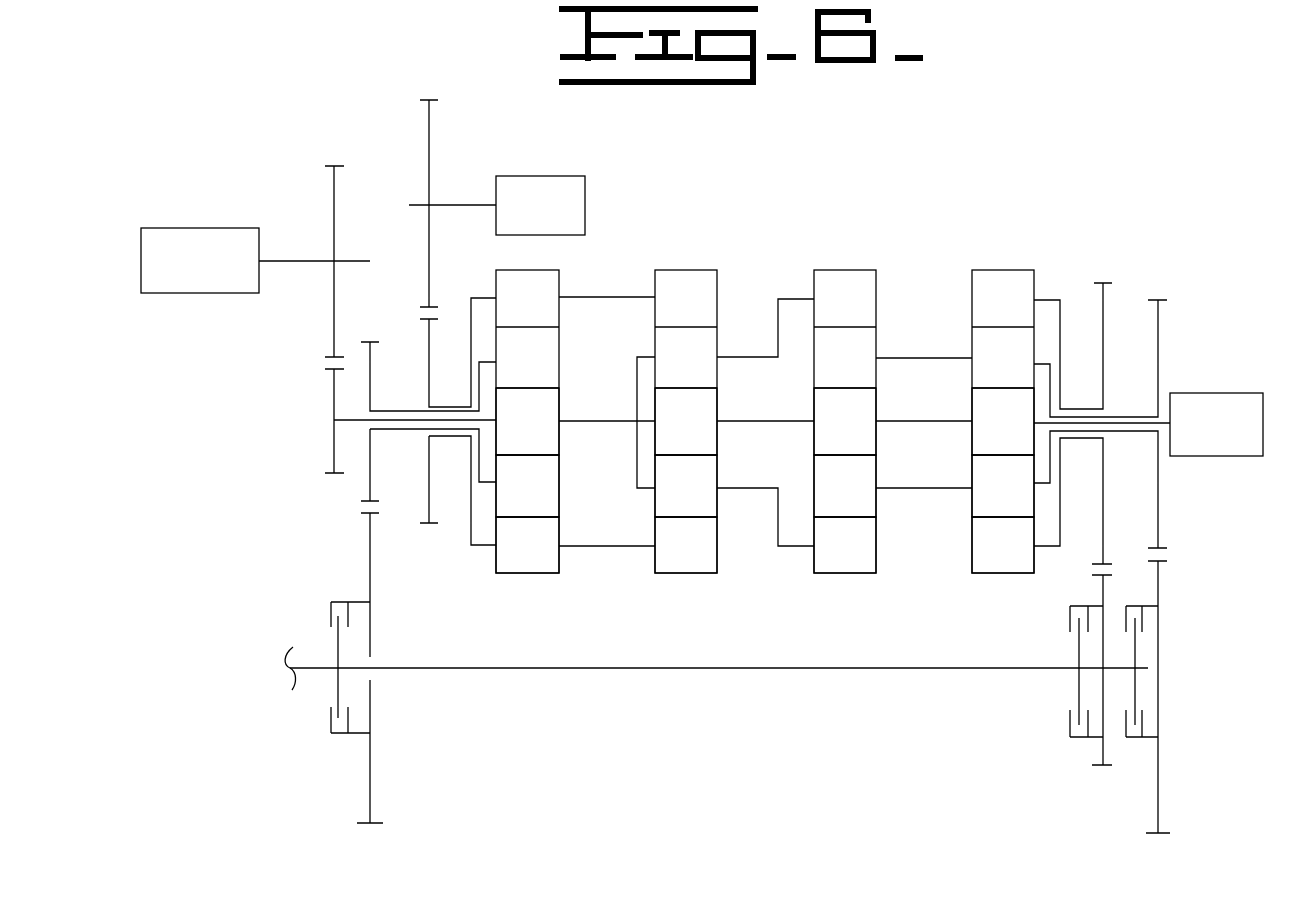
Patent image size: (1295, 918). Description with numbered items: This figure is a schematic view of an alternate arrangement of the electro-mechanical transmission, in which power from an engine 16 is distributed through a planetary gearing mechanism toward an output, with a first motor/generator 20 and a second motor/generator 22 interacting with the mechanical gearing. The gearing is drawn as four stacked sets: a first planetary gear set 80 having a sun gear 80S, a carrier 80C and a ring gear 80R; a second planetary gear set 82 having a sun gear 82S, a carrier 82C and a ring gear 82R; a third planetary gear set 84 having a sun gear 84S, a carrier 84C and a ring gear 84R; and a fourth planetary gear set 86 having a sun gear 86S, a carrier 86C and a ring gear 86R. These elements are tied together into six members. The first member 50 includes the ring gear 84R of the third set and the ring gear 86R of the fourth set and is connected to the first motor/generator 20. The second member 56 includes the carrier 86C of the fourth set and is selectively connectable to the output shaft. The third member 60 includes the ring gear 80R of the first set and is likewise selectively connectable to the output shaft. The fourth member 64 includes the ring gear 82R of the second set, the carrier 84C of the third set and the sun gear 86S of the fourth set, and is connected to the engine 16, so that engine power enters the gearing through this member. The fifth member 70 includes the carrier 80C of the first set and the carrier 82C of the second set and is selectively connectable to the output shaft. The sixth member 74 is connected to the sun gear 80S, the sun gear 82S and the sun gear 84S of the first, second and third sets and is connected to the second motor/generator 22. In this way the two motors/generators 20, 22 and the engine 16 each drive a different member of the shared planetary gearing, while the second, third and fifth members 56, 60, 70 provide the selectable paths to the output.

The engine 16 is at (217, 228).
The first motor/generator 20 is at (558, 176).
The second motor/generator 22 is at (1245, 393).
The first member 50 is at (490, 298).
The second member 56 is at (390, 430).
The third member 60 is at (1040, 298).
The fourth member 64 is at (357, 422).
The fifth member 70 is at (1150, 432).
The sixth member 74 is at (1163, 425).
The first planetary gear set 80 is at (1006, 590).
The sun gear 80S is at (972, 414).
The carrier 80C is at (972, 500).
The ring gear 80R is at (967, 573).
The second planetary gear set 82 is at (843, 590).
The sun gear 82S is at (876, 445).
The carrier 82C is at (876, 512).
The ring gear 82R is at (876, 573).
The third planetary gear set 84 is at (683, 590).
The sun gear 84S is at (717, 413).
The carrier 84C is at (717, 470).
The ring gear 84R is at (717, 564).
The fourth planetary gear set 86 is at (525, 590).
The sun gear 86S is at (559, 413).
The carrier 86C is at (559, 478).
The ring gear 86R is at (559, 564).